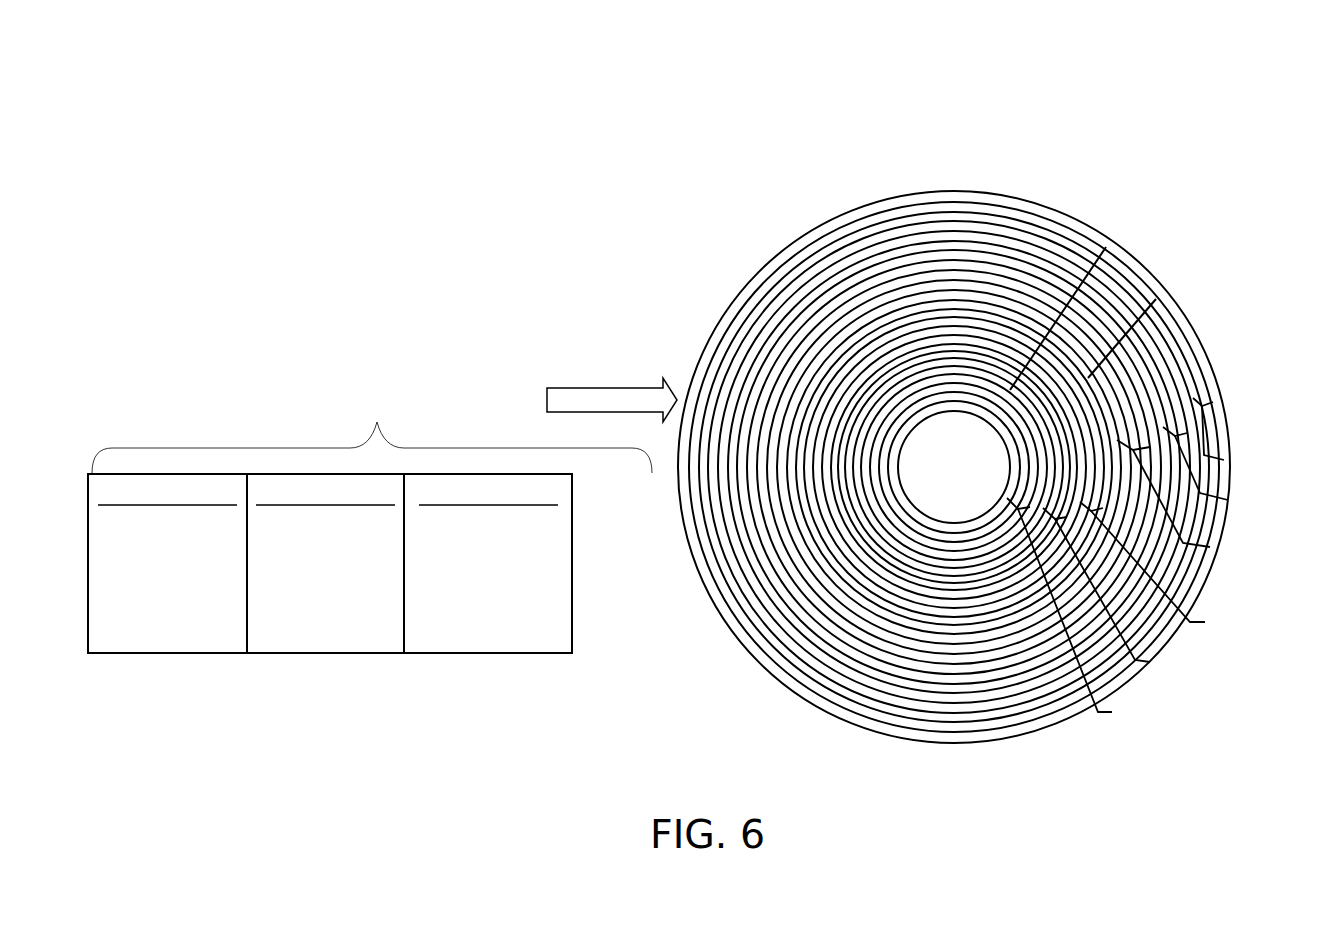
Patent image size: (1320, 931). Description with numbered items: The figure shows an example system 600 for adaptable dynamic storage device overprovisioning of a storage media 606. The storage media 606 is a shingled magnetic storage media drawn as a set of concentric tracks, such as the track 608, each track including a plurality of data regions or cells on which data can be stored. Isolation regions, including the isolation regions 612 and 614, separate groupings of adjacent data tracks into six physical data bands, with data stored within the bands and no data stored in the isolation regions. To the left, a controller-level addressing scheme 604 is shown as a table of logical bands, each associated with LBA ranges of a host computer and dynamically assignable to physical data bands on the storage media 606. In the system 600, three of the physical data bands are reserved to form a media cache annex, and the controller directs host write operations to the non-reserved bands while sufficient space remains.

The system 600 is at (256, 89).
The controller-level addressing scheme 604 is at (377, 421).
The storage media 606 is at (762, 231).
The track 608 is at (1029, 223).
The isolation region 612 is at (1156, 299).
The isolation region 614 is at (1106, 247).